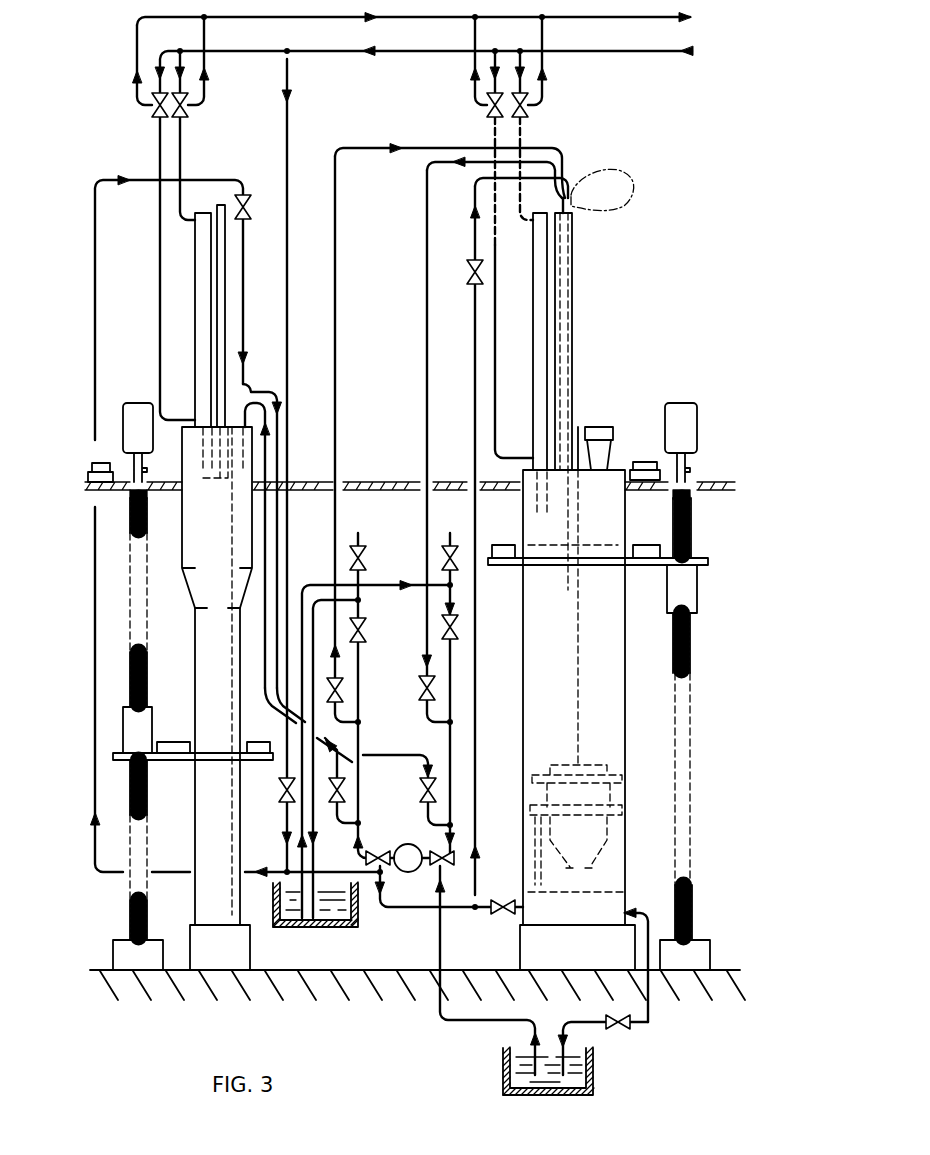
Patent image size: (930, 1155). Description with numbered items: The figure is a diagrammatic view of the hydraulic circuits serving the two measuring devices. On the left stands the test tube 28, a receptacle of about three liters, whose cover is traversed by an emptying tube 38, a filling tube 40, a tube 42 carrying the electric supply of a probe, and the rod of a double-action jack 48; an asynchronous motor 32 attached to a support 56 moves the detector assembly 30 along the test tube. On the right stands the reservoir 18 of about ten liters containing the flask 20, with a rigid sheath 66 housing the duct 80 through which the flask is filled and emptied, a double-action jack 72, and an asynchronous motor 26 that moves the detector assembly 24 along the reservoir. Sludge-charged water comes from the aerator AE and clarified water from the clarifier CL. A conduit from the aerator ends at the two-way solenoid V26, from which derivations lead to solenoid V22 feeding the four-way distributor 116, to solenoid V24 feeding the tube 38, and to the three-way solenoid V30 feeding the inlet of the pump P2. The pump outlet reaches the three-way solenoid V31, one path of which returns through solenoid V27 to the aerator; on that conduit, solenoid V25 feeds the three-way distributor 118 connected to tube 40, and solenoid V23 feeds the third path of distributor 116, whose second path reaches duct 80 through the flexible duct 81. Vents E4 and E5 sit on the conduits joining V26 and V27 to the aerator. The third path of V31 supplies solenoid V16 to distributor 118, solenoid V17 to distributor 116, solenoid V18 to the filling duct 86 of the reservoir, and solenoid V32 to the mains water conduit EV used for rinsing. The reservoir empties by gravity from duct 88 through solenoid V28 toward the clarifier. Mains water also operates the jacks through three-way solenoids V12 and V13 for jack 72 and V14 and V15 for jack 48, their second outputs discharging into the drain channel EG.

The drain channel EG is at (436, 18).
The mains water supply conduit EV is at (446, 66).
The three-way solenoid V12 is at (530, 112).
The three-way solenoid V13 is at (487, 112).
The three-way solenoid V14 is at (190, 108).
The three-way solenoid V15 is at (152, 112).
The two-way solenoid V16 is at (247, 198).
The two-way solenoid V17 is at (467, 268).
The two-way solenoid V18 is at (500, 915).
The two-way solenoid V22 is at (419, 686).
The two-way solenoid V23 is at (343, 697).
The two-way solenoid V24 is at (440, 782).
The two-way solenoid V25 is at (345, 797).
The two-way solenoid V26 is at (456, 636).
The two-way solenoid V27 is at (364, 638).
The two-way solenoid V28 is at (620, 1034).
The three-way solenoid V30 is at (452, 852).
The three-way solenoid V31 is at (380, 851).
The two-way solenoid V32 is at (285, 785).
The vent solenoid E4 is at (366, 550).
The vent solenoid E5 is at (452, 548).
The aerator AE is at (340, 905).
The clarifier CL is at (512, 1068).
The pump P2 is at (408, 872).
The four-way distributor 116 is at (576, 167).
The three-way distributor 118 is at (262, 395).
The flexible duct 81 is at (632, 182).
The duct 80 is at (570, 205).
The rigid sheath 66 is at (553, 305).
The double-action jack 72 is at (540, 365).
The asynchronous motor 26 is at (683, 410).
The detector assembly 24 is at (702, 552).
The reservoir 18 is at (623, 675).
The flask 20 is at (597, 762).
The emptying duct 88 is at (650, 905).
The filling duct 86 is at (505, 898).
The double-action jack 48 is at (205, 280).
The tube 42 is at (220, 307).
The emptying tube 38 is at (248, 392).
The filling tube 40 is at (268, 415).
The asynchronous motor 32 is at (140, 412).
The support 56 is at (358, 482).
The detector assembly 30 is at (115, 748).
The test tube 28 is at (215, 838).